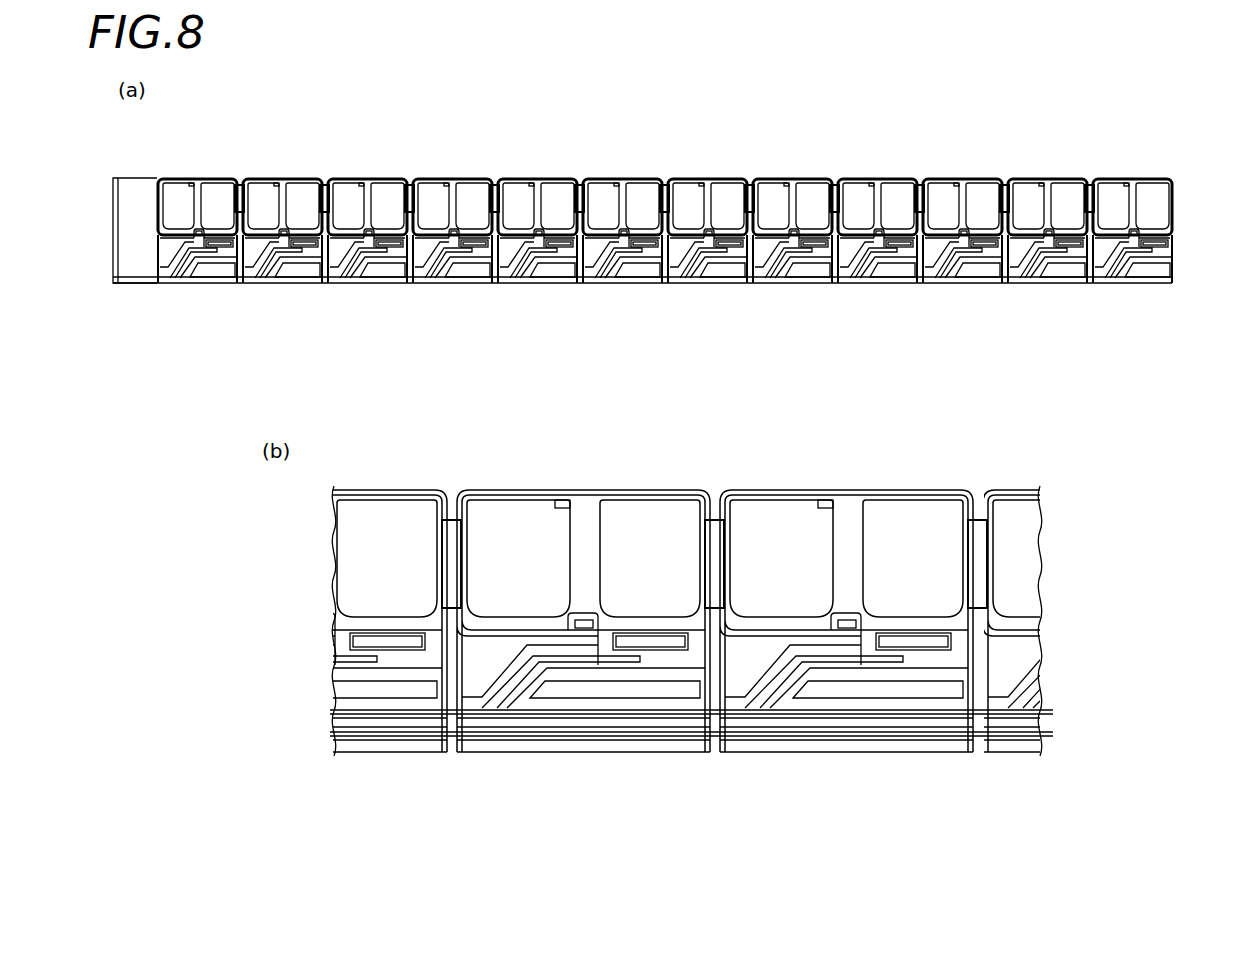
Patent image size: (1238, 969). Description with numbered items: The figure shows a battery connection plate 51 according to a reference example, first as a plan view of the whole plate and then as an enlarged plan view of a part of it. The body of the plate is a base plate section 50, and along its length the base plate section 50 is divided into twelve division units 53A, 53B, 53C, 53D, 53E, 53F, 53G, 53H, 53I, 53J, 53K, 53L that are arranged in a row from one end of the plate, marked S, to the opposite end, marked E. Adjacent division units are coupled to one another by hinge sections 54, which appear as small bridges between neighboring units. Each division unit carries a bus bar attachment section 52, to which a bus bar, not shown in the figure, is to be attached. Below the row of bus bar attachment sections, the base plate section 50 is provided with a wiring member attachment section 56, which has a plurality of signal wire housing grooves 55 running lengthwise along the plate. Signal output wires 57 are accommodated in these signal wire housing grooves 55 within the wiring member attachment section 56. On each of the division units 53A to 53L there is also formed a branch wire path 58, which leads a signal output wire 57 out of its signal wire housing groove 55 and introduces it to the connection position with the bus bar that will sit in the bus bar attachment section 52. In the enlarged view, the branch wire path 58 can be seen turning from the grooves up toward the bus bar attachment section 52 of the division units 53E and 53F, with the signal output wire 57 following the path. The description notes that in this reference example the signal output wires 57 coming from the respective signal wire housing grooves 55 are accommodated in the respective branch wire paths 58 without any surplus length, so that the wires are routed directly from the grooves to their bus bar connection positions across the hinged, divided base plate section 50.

The start end S is at (110, 210).
The end portion E is at (1180, 205).
The base plate section 50 is at (574, 167).
The battery connection plate 51 is at (742, 153).
The bus bar attachment section 52 is at (212, 190).
The division unit 53A is at (173, 180).
The division unit 53B is at (271, 180).
The division unit 53C is at (383, 180).
The division unit 53D is at (432, 213).
The division unit 53E is at (548, 180).
The division unit 53F is at (631, 180).
The division unit 53G is at (715, 180).
The division unit 53H is at (802, 180).
The division unit 53I is at (885, 180).
The division unit 53J is at (973, 180).
The division unit 53K is at (1055, 180).
The division unit 53L is at (1130, 227).
The hinge section 54 is at (235, 185).
The signal wire housing groove 55 is at (238, 270).
The wiring member attachment section 56 is at (317, 282).
The signal output wire 57 is at (544, 653).
The branch wire path 58 is at (181, 242).